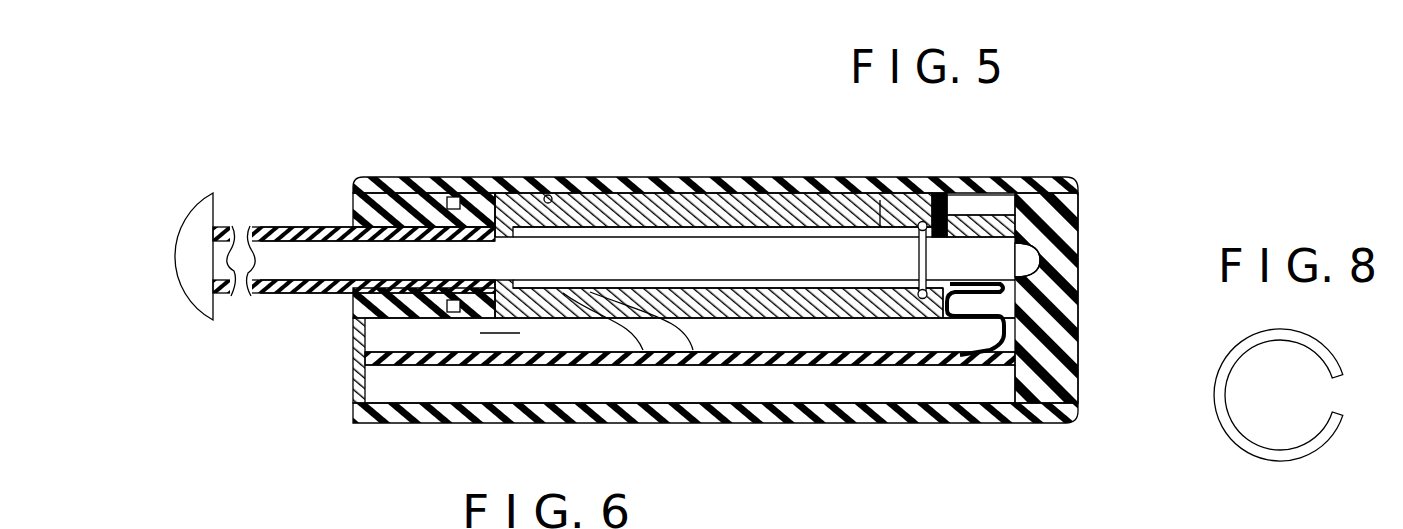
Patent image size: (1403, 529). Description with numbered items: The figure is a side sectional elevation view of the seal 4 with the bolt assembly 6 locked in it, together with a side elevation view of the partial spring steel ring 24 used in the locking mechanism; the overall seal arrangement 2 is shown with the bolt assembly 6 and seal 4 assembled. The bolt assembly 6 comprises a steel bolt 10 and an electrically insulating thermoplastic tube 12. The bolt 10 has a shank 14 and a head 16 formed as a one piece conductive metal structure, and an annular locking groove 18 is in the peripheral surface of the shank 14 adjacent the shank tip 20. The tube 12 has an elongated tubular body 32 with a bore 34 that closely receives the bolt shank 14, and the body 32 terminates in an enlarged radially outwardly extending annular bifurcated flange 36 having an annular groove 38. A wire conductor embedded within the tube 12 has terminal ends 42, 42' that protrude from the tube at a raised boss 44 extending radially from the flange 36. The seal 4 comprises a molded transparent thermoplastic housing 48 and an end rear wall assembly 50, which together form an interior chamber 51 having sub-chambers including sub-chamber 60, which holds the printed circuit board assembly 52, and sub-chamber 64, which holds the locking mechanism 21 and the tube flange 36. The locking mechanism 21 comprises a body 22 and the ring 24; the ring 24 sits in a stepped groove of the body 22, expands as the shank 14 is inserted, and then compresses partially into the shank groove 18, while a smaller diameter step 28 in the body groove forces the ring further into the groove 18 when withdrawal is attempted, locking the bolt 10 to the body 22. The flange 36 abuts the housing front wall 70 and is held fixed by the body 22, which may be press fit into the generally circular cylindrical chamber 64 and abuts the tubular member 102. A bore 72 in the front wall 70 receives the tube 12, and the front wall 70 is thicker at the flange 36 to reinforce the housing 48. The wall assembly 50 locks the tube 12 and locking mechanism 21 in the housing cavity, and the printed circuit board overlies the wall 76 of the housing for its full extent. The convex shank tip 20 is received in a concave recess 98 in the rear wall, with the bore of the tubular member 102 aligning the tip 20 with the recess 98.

In FIG. 5, the piston assembly 2 is at (698, 132).
In FIG. 5, the seal 4 is at (1115, 165).
In FIG. 5, the bolt assembly 6 is at (270, 152).
In FIG. 5, the bolt 10 is at (270, 268).
In FIG. 5, the thermoplastic tube 12 is at (319, 200).
In FIG. 5, the shank 14 is at (727, 250).
In FIG. 5, the head 16 is at (200, 212).
In FIG. 5, the annular locking groove 18 is at (930, 260).
In FIG. 5, the shank tip 20 is at (1007, 259).
In FIG. 5, the locking mechanism 21 is at (613, 207).
In FIG. 5, the body 22 is at (888, 205).
In FIG. 5, the partial spring steel ring 24 is at (921, 222).
In FIG. 8, the partial spring steel ring 24 is at (1322, 450).
In FIG. 5, the step 28 is at (913, 238).
In FIG. 5, the tubular body 32 is at (338, 226).
In FIG. 5, the bore 34 is at (366, 240).
In FIG. 5, the annular bifurcated flange 36 is at (490, 215).
In FIG. 5, the annular groove 38 is at (455, 197).
In FIG. 5, the terminal end 42 is at (690, 381).
In FIG. 5, the terminal end 42' is at (670, 411).
In FIG. 5, the raised boss 44 is at (497, 333).
In FIG. 5, the housing 48 is at (1019, 165).
In FIG. 5, the end rear wall assembly 50 is at (1098, 318).
In FIG. 5, the interior chamber 51 is at (1000, 382).
In FIG. 5, the printed circuit board assembly 52 is at (878, 370).
In FIG. 5, the sub-chamber 60 is at (500, 333).
In FIG. 5, the sub-chamber 64 is at (548, 195).
In FIG. 5, the front wall 70 is at (352, 372).
In FIG. 5, the bore 72 is at (340, 276).
In FIG. 5, the wall 76 is at (988, 422).
In FIG. 5, the concave recess 98 is at (1080, 227).
In FIG. 5, the tubular member 102 is at (1040, 197).